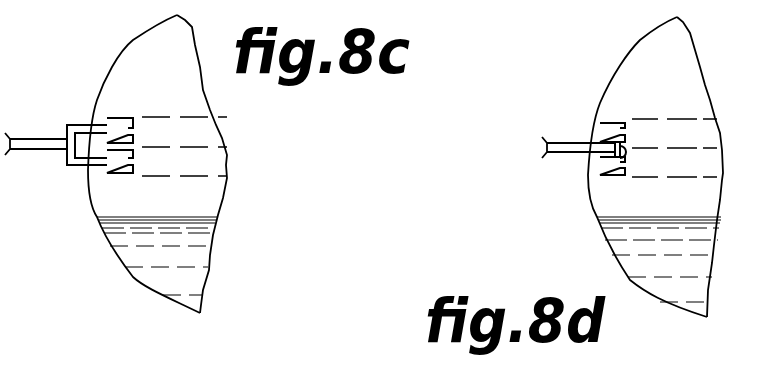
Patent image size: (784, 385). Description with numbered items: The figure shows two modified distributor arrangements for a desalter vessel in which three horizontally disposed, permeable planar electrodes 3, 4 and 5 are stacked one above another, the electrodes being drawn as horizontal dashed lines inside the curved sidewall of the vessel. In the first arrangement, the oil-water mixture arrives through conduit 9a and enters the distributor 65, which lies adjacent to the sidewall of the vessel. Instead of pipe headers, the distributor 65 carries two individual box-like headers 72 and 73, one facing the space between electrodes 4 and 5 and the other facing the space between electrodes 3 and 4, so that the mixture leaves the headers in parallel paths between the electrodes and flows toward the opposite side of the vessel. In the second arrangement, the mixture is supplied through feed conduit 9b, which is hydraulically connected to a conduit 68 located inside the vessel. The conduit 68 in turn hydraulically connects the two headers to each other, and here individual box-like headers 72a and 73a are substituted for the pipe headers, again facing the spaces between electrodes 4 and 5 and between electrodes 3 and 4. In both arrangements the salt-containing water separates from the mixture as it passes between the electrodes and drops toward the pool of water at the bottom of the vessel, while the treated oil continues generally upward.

In FIG. 8C, the planar electrode 3 is at (187, 115).
In FIG. 8D, the planar electrode 3 is at (682, 118).
In FIG. 8C, the planar electrode 4 is at (199, 147).
In FIG. 8D, the planar electrode 4 is at (707, 147).
In FIG. 8C, the planar electrode 5 is at (203, 175).
In FIG. 8D, the planar electrode 5 is at (710, 175).
In FIG. 8C, the conduit 9a is at (42, 150).
In FIG. 8D, the feed conduit 9b is at (577, 143).
In FIG. 8C, the distributor 65 is at (67, 128).
In FIG. 8D, the conduit 68 is at (618, 157).
In FIG. 8C, the box-like header 72 is at (125, 174).
In FIG. 8C, the box-like header 73 is at (127, 118).
In FIG. 8D, the box-like header 72a is at (627, 163).
In FIG. 8D, the box-like header 73a is at (627, 130).